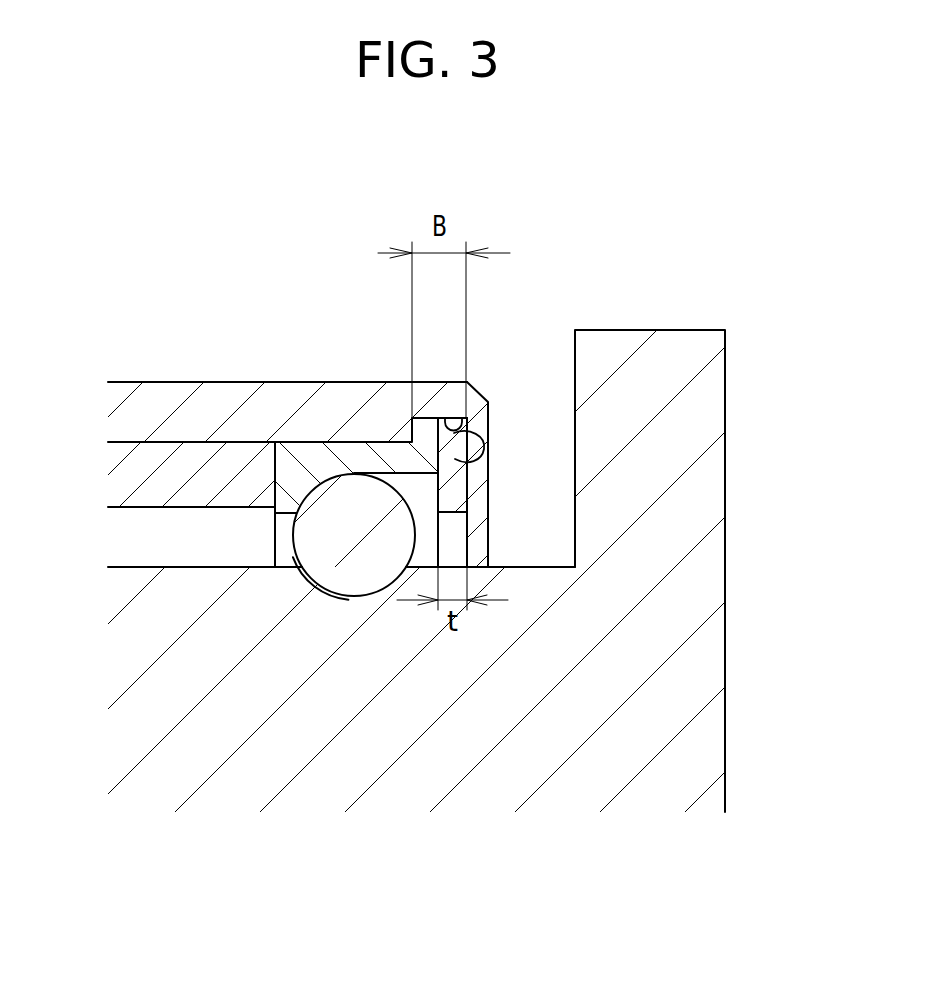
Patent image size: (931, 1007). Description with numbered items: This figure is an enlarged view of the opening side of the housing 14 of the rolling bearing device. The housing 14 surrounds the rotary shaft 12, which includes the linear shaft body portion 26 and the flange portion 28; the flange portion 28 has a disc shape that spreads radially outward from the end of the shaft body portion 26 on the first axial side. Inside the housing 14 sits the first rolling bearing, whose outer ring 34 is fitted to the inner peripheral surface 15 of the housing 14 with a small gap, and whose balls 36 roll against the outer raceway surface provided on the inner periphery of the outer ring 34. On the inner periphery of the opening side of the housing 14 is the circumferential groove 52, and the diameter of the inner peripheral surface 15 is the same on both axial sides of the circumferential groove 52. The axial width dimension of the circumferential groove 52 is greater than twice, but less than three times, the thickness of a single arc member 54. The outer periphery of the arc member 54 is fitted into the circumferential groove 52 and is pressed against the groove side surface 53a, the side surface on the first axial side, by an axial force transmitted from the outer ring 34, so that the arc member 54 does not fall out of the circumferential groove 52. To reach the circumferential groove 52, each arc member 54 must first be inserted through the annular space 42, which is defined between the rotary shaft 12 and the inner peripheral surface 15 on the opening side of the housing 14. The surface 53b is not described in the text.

The rotary shaft 12 is at (120, 566).
The housing 14 is at (227, 381).
The inner peripheral surface 15 is at (489, 456).
The shaft body portion 26 is at (422, 774).
The flange portion 28 is at (642, 357).
The outer ring 34 is at (308, 461).
The balls 36 is at (306, 539).
The annular space 42 is at (478, 543).
The circumferential groove 52 is at (432, 445).
The groove side surface 53a is at (470, 469).
The seal lip 53b is at (445, 418).
The arc member 54 is at (457, 494).